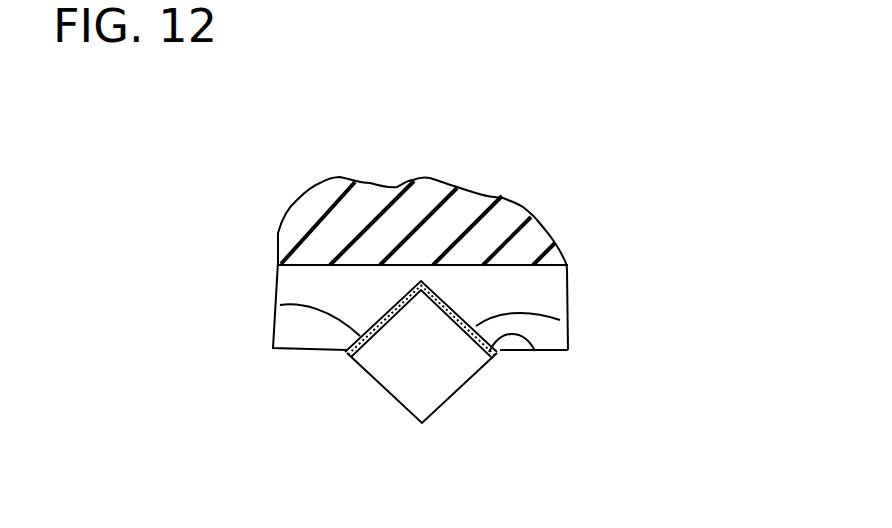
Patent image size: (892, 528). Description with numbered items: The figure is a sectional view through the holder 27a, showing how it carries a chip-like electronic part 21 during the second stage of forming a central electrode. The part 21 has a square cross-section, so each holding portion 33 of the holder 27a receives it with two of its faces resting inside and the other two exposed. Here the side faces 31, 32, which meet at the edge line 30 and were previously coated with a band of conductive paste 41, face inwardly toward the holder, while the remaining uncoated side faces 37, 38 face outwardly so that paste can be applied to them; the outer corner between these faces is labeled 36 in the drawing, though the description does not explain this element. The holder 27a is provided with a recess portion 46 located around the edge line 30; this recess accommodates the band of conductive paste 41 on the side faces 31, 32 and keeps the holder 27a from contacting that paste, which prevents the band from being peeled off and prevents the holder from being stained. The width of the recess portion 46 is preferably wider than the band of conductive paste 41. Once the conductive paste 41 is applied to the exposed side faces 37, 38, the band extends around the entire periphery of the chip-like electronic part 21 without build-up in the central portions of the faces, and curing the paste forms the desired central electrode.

The holder 27a is at (528, 178).
The recess portion 46 is at (523, 267).
The edge line 30 is at (421, 281).
The holding portion 33 is at (375, 288).
The side face 32 is at (280, 305).
The side face 31 is at (560, 320).
The conductive paste 41 is at (533, 350).
The chip-like electronic part 21 is at (393, 398).
The side face 37 is at (367, 377).
The side face 38 is at (457, 393).
The tip apex 36 is at (422, 423).